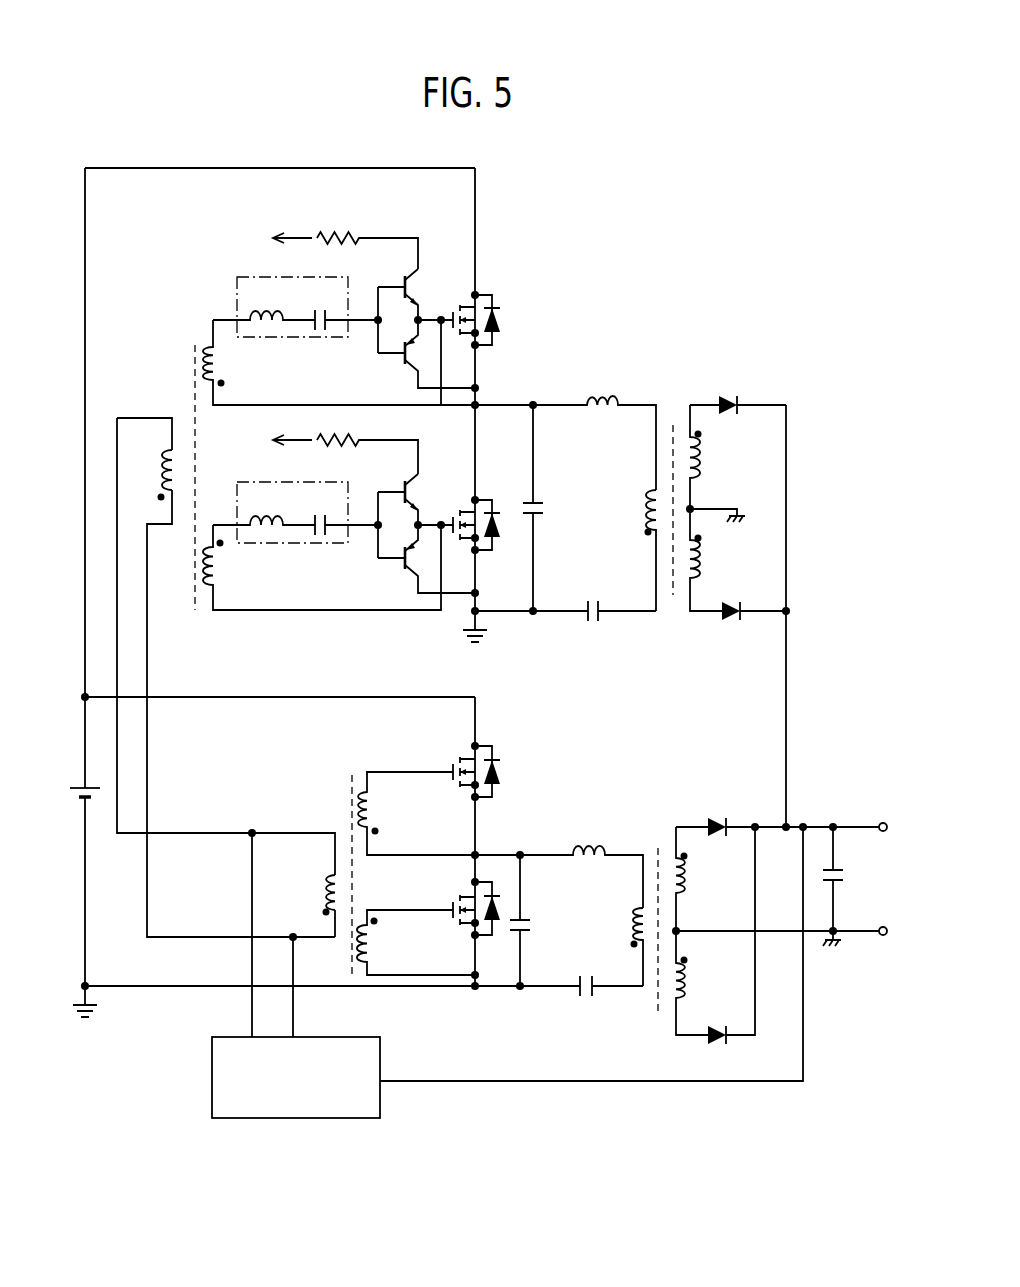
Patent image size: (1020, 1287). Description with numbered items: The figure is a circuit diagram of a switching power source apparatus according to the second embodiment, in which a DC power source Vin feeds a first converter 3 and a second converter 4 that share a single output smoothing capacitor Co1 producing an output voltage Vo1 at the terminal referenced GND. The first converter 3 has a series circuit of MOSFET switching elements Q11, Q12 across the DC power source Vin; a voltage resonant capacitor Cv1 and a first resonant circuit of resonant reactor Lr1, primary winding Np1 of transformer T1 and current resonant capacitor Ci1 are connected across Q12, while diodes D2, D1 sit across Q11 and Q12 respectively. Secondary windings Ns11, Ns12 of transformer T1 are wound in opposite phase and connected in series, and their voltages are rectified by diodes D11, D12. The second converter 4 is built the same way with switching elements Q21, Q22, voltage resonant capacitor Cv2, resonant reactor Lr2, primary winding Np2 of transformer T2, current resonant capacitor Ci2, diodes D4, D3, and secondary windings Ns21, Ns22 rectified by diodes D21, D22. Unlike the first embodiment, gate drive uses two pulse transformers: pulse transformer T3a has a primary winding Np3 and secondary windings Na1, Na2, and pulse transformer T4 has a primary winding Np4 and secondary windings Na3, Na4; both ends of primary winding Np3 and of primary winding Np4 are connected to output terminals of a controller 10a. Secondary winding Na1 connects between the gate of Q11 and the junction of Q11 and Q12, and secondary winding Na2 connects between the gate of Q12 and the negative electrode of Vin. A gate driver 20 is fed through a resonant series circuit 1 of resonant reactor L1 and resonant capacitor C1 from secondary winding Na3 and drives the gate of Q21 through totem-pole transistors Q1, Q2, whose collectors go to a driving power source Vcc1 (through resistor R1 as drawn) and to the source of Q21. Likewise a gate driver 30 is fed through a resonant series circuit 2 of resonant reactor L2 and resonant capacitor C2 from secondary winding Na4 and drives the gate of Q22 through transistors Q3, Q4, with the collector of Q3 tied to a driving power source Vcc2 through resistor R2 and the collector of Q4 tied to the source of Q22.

The resonant series circuit 1 is at (271, 294).
The resonant series circuit 2 is at (292, 497).
The first converter 3 is at (617, 946).
The second converter 4 is at (681, 555).
The controller 10a is at (212, 1081).
The gate driver 20 is at (348, 294).
The gate driver 30 is at (360, 551).
The DC power source Vin is at (66, 793).
The driving power source Vcc1 is at (264, 238).
The driving power source Vcc2 is at (264, 439).
The resistor R1 is at (367, 255).
The resistor R2 is at (367, 455).
The resonant reactor L1 is at (264, 299).
The resonant reactor L2 is at (264, 504).
The resonant capacitor C1 is at (342, 304).
The resonant capacitor C2 is at (342, 509).
The pulse transformer T4 is at (194, 451).
The secondary winding Na3 is at (339, 362).
The secondary winding Na4 is at (322, 567).
The primary winding Np4 is at (226, 677).
The primary winding Np3 is at (307, 905).
The transistor Q1 is at (395, 288).
The transistor Q2 is at (424, 341).
The transistor Q3 is at (395, 490).
The transistor Q4 is at (423, 545).
The switching element Q21 is at (450, 295).
The switching element Q22 is at (447, 505).
The diode D4 is at (503, 320).
The diode D3 is at (496, 541).
The resonant reactor Lr2 is at (565, 428).
The voltage resonant capacitor Cv2 is at (555, 508).
The current resonant capacitor Ci2 is at (565, 627).
The transformer T2 is at (673, 485).
The primary winding Np2 is at (629, 550).
The secondary winding Ns21 is at (721, 463).
The secondary winding Ns22 is at (723, 560).
The diode D21 is at (738, 389).
The diode D22 is at (753, 628).
The pulse transformer T3a is at (349, 856).
The secondary winding Na1 is at (439, 813).
The secondary winding Na2 is at (416, 942).
The switching element Q11 is at (450, 757).
The switching element Q12 is at (446, 898).
The diode D2 is at (502, 771).
The diode D1 is at (491, 924).
The voltage resonant capacitor Cv1 is at (542, 920).
The resonant reactor Lr1 is at (581, 863).
The current resonant capacitor Ci1 is at (589, 1000).
The primary winding Np1 is at (616, 947).
The transformer T1 is at (658, 914).
The secondary winding Ns11 is at (777, 879).
The secondary winding Ns12 is at (709, 983).
The diode D11 is at (777, 810).
The diode D12 is at (727, 950).
The output smoothing capacitor Co1 is at (857, 886).
The output voltage Vo1 is at (882, 810).
The ground terminal GND is at (876, 948).